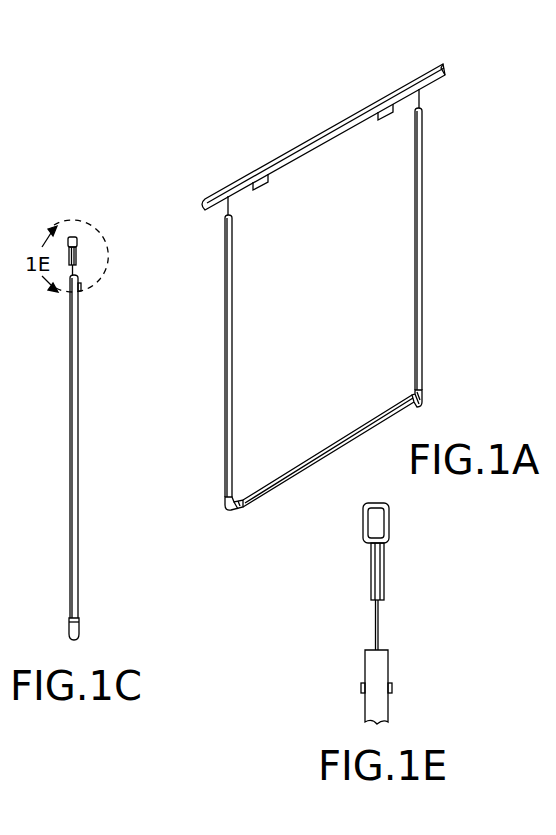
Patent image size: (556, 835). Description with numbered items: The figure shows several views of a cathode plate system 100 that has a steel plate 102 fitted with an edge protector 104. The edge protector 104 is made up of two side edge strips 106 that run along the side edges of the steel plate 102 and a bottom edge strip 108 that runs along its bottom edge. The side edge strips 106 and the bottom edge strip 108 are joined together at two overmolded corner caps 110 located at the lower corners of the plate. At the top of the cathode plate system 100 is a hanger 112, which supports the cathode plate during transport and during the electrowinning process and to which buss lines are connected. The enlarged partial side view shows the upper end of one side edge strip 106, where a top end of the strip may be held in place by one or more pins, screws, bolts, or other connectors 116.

In FIG. 1A, the cathode plate system 100 is at (463, 132).
In FIG. 1E, the cathode plate system 100 is at (455, 570).
In FIG. 1A, the steel plate 102 is at (407, 222).
In FIG. 1E, the steel plate 102 is at (380, 620).
In FIG. 1A, the edge protector 104 is at (418, 338).
In FIG. 1C, the edge protector 104 is at (73, 508).
In FIG. 1E, the edge protector 104 is at (386, 713).
In FIG. 1A, the side edge strips 106 is at (420, 271).
In FIG. 1C, the side edge strips 106 is at (72, 425).
In FIG. 1E, the side edge strips 106 is at (366, 660).
In FIG. 1A, the bottom edge strip 108 is at (346, 446).
In FIG. 1A, the overmolded corner caps 110 is at (420, 404).
In FIG. 1C, the overmolded corner caps 110 is at (76, 626).
In FIG. 1E, the hanger 112 is at (382, 528).
In FIG. 1E, the connectors 116 is at (393, 684).